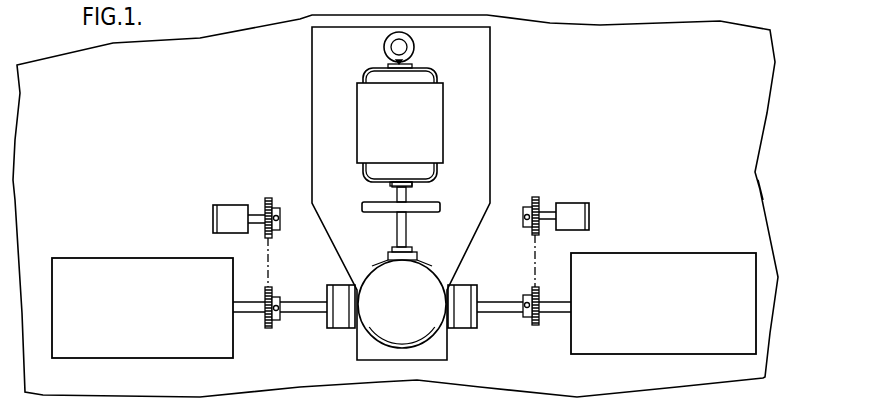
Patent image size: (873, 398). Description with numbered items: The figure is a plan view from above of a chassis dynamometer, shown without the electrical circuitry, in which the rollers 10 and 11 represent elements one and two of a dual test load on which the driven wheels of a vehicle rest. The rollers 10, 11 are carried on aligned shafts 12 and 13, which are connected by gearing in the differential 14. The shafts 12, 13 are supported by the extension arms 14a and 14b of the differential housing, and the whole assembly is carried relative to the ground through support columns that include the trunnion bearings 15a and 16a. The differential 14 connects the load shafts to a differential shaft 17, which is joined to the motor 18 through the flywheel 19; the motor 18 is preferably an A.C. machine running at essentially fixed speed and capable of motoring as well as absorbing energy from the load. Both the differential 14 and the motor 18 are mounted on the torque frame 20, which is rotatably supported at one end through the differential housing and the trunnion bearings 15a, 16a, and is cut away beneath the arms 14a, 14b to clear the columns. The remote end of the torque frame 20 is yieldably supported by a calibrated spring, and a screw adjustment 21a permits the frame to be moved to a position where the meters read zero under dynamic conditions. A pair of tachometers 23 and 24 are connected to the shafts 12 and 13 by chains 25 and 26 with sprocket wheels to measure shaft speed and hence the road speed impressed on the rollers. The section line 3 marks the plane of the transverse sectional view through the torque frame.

The section line 3- 3 is at (508, 78).
The roller 10 is at (150, 331).
The roller 11 is at (670, 331).
The shaft 12 is at (293, 308).
The shaft 13 is at (497, 298).
The differential 14 is at (412, 326).
The differential housing extension arm 14a is at (358, 288).
The differential housing extension arm 14b is at (447, 287).
The trunnion bearing 15a is at (337, 323).
The trunnion bearing 16a is at (468, 317).
The differential shaft 17 is at (407, 250).
The motor 18 is at (408, 129).
The flywheel 19 is at (440, 203).
The torque frame 20 is at (485, 135).
The screw adjustment 21a is at (384, 47).
The tachometer 23 is at (217, 218).
The tachometer 24 is at (585, 222).
The chain 25 is at (272, 275).
The chain 26 is at (530, 248).